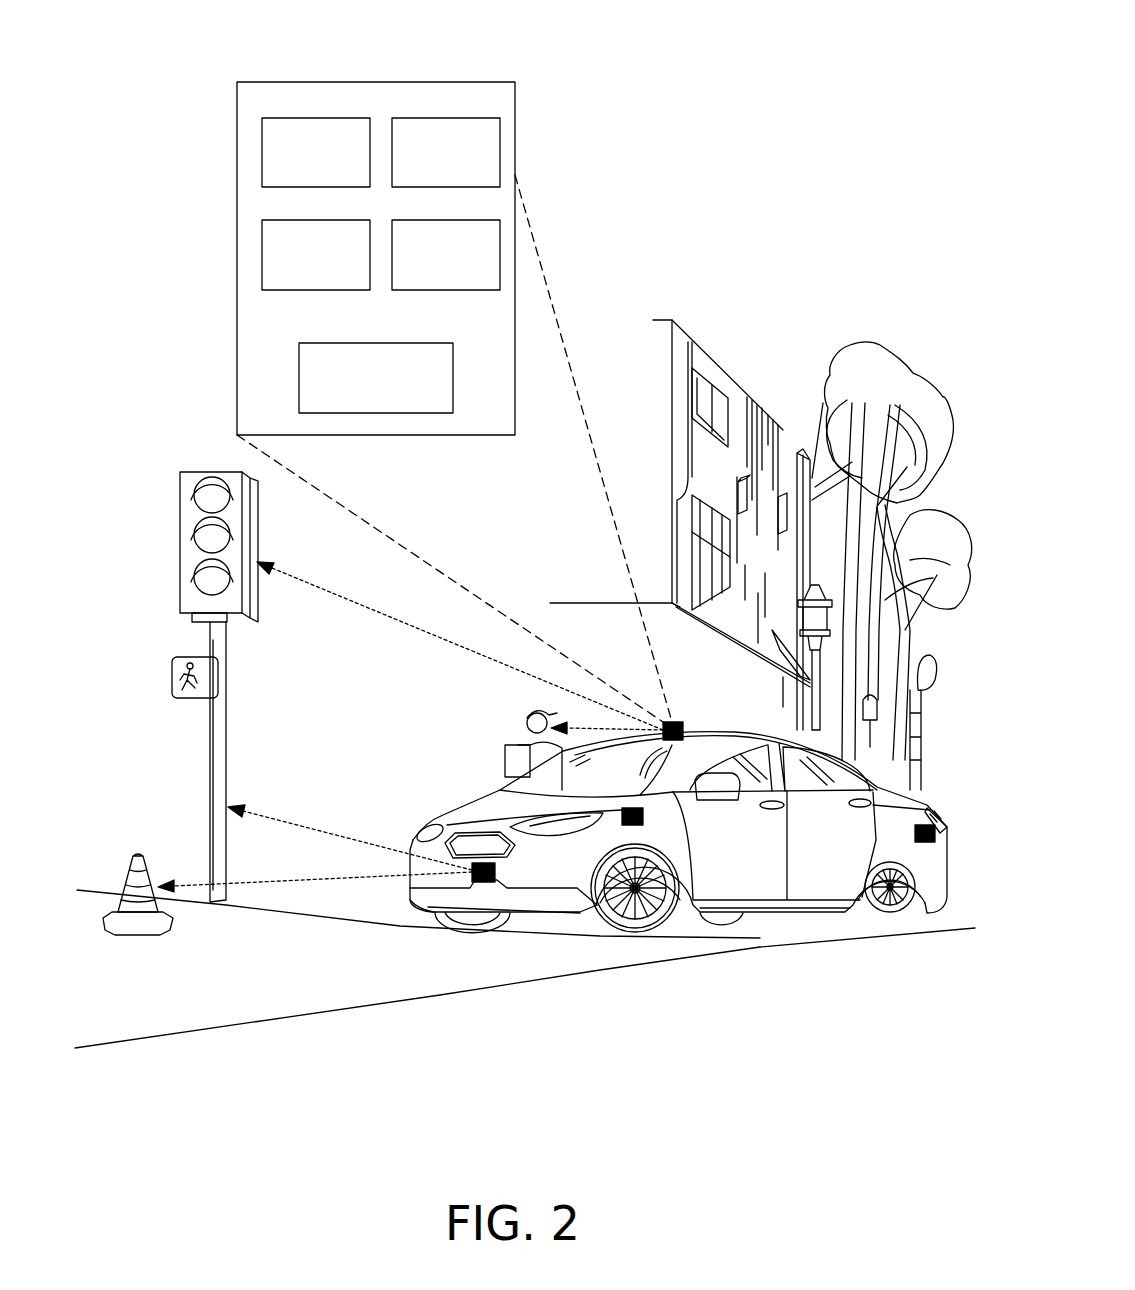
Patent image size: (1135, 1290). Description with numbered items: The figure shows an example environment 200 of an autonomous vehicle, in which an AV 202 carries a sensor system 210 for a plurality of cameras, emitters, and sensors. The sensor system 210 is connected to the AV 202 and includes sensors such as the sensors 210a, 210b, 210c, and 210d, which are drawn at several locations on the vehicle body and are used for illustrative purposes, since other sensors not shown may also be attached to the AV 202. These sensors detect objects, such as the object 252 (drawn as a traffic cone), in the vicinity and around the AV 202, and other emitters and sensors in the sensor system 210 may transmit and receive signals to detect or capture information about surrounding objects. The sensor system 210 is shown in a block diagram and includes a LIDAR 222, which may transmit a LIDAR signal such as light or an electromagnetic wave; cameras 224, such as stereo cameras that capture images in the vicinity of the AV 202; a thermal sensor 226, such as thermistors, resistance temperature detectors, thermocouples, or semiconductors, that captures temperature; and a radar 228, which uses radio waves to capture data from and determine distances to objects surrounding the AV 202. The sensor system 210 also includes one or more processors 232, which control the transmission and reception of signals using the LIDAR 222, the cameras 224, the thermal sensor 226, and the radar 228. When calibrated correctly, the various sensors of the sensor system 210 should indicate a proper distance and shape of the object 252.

The environment 200 is at (878, 20).
The AV 202 is at (445, 822).
The sensor system 210 is at (384, 82).
The sensor 210a is at (685, 733).
The sensor 210b is at (630, 808).
The sensor 210c is at (496, 875).
The sensor 210d is at (943, 810).
The LIDAR 222 is at (448, 220).
The cameras 224 is at (298, 220).
The thermal sensor 226 is at (298, 118).
The radar 228 is at (428, 118).
The processors 232 is at (388, 343).
The object 252 is at (147, 932).